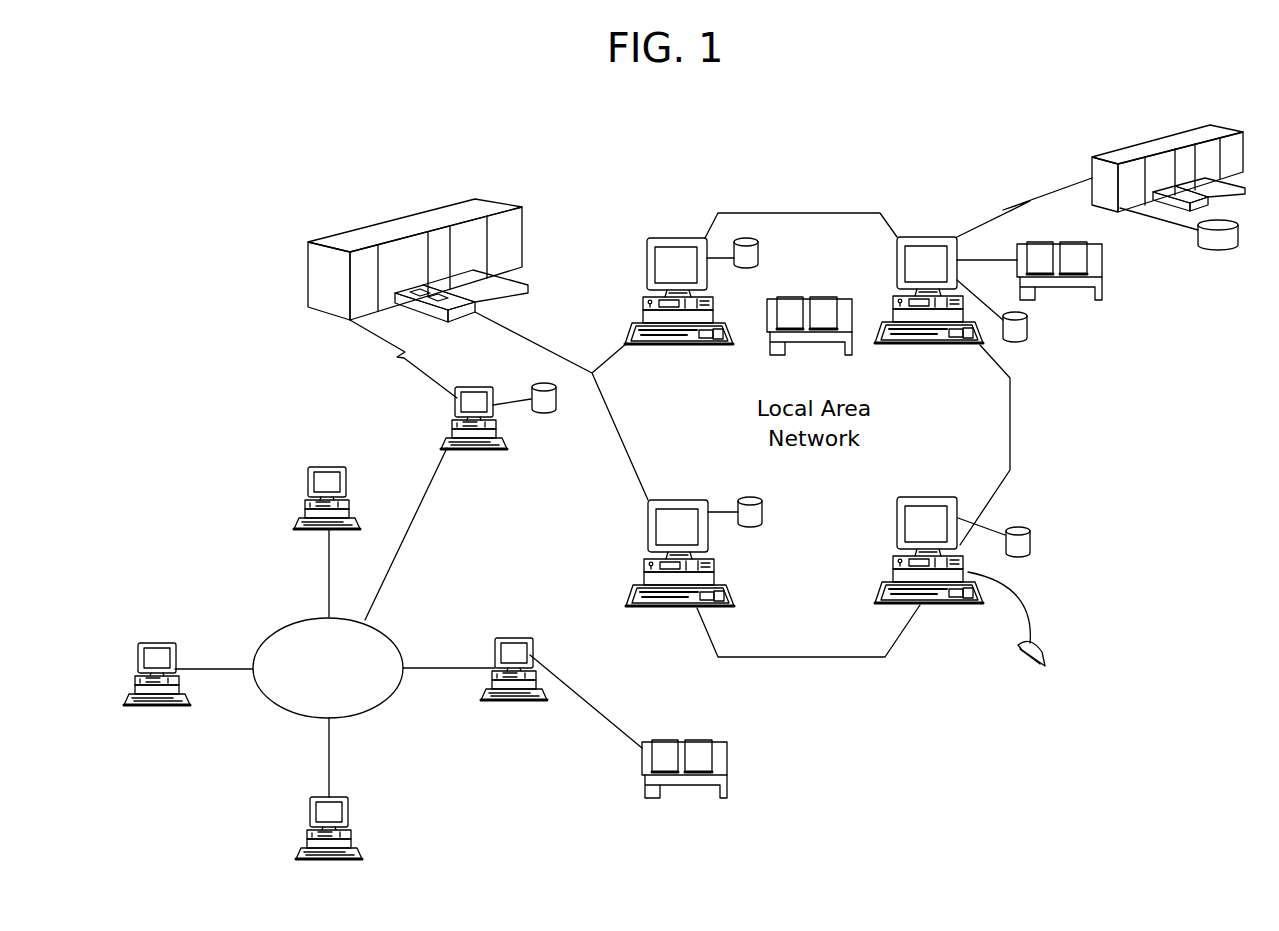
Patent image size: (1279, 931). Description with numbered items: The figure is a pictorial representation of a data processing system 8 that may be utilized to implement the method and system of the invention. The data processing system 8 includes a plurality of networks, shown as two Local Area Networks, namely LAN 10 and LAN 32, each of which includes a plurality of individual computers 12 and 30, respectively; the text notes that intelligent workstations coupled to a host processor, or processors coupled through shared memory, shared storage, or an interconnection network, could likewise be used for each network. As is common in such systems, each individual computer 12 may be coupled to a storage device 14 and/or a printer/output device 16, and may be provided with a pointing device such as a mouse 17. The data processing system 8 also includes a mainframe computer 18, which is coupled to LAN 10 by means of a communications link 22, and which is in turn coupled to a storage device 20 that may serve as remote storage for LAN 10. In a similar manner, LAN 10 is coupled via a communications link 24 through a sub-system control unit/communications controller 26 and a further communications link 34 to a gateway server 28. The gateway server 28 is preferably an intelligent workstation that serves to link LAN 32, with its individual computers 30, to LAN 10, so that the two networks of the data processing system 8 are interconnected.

The data processing system 8 is at (852, 200).
The Local Area Network 10 is at (870, 657).
The individual computer 12 is at (695, 236).
The storage device 14 is at (758, 260).
The printer/output device 16 is at (803, 297).
The mouse 17 is at (1045, 656).
The mainframe computer 18 is at (1155, 140).
The storage device 20 is at (1222, 250).
The communications link 22 is at (1040, 198).
The communications link 24 is at (546, 348).
The sub-system control unit/communications controller 26 is at (400, 216).
The gateway server 28 is at (466, 386).
The individual computer 30 is at (335, 467).
The Local Area Network 32 is at (258, 693).
The communications link 34 is at (385, 352).